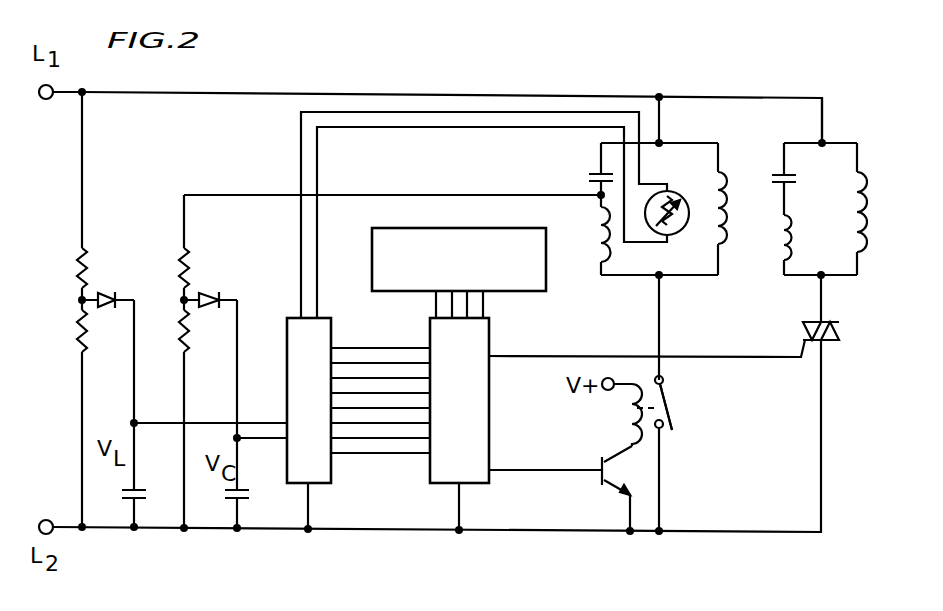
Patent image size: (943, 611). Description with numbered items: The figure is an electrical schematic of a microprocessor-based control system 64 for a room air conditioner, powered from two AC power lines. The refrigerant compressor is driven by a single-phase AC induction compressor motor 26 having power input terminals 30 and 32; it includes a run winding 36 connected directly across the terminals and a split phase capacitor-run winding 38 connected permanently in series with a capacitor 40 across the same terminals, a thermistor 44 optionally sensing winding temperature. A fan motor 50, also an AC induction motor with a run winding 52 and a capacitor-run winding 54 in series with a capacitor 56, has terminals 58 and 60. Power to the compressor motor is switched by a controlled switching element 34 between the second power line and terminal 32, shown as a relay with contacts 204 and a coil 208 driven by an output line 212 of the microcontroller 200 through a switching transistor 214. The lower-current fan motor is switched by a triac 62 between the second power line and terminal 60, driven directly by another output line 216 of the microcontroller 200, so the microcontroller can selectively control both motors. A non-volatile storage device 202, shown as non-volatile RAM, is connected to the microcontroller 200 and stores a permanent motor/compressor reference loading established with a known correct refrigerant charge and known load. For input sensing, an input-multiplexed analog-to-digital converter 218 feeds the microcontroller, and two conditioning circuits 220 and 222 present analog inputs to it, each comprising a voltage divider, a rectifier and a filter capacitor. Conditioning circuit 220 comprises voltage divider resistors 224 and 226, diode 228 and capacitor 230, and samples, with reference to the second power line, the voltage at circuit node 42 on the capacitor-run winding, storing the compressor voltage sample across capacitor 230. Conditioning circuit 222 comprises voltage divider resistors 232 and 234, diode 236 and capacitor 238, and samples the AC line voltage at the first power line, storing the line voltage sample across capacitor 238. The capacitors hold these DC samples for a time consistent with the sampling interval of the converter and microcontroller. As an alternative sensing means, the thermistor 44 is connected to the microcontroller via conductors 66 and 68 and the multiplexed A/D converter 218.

The control system 64 is at (516, 82).
The compressor motor 26 is at (700, 169).
The AC power input terminal 30 is at (662, 141).
The AC power input terminal 32 is at (662, 279).
The controlled switching element 34 is at (672, 434).
The run winding 36 is at (722, 200).
The capacitor-run winding 38 is at (598, 236).
The capacitor 40 is at (589, 176).
The circuit node 42 is at (599, 197).
The thermistor 44 is at (685, 229).
The fan motor 50 is at (841, 172).
The run winding 52 is at (858, 203).
The capacitor-run winding 54 is at (786, 222).
The capacitor 56 is at (776, 176).
The terminal 58 is at (820, 142).
The terminal 60 is at (818, 277).
The triac 62 is at (802, 333).
The conductor 66 is at (301, 160).
The conductor 68 is at (318, 163).
The microcontroller 200 is at (428, 471).
The non-volatile storage device 202 is at (420, 293).
The relay contacts 204 is at (674, 422).
The relay coil 208 is at (630, 411).
The output line 212 is at (552, 469).
The switching transistor 214 is at (598, 491).
The output line 216 is at (647, 337).
The analog-to-digital converter 218 is at (331, 463).
The conditioning circuit 220 is at (223, 404).
The conditioning circuit 222 is at (126, 389).
The voltage divider resistor 224 is at (190, 247).
The voltage divider resistor 226 is at (188, 333).
The diode 228 is at (213, 290).
The capacitor 230 is at (244, 500).
The voltage divider resistor 232 is at (88, 247).
The voltage divider resistor 234 is at (86, 321).
The diode 236 is at (102, 291).
The capacitor 238 is at (141, 500).